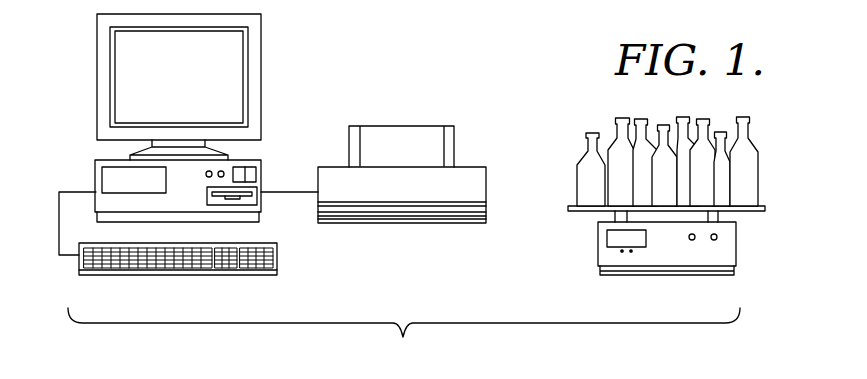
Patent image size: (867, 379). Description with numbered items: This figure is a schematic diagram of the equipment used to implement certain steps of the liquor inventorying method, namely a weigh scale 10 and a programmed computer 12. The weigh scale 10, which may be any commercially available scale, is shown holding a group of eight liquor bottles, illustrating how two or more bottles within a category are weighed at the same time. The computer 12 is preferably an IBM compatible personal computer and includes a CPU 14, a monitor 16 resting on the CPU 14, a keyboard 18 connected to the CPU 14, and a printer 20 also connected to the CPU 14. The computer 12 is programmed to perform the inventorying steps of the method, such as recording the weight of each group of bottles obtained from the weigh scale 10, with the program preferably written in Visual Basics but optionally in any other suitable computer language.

The weigh scale 10 is at (745, 250).
The programmed computer 12 is at (77, 97).
The CPU 14 is at (101, 169).
The monitor 16 is at (232, 76).
The keyboard 18 is at (277, 252).
The printer 20 is at (463, 174).